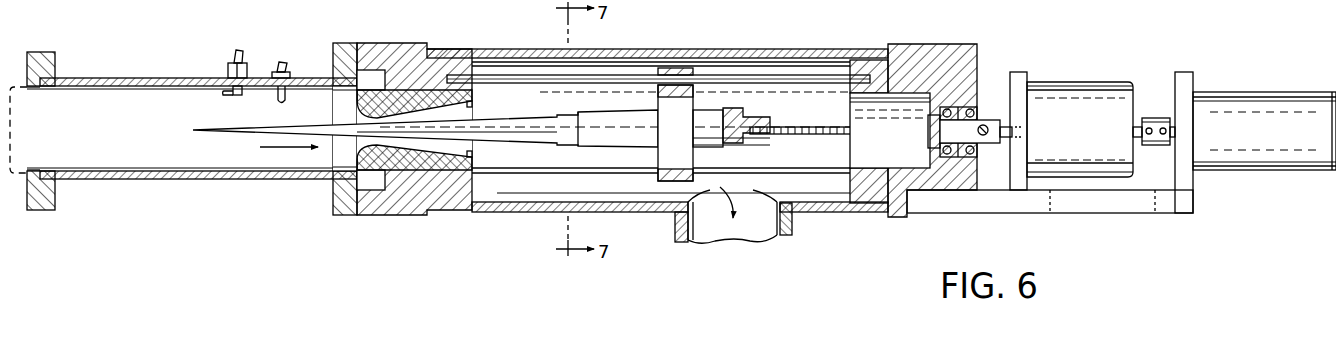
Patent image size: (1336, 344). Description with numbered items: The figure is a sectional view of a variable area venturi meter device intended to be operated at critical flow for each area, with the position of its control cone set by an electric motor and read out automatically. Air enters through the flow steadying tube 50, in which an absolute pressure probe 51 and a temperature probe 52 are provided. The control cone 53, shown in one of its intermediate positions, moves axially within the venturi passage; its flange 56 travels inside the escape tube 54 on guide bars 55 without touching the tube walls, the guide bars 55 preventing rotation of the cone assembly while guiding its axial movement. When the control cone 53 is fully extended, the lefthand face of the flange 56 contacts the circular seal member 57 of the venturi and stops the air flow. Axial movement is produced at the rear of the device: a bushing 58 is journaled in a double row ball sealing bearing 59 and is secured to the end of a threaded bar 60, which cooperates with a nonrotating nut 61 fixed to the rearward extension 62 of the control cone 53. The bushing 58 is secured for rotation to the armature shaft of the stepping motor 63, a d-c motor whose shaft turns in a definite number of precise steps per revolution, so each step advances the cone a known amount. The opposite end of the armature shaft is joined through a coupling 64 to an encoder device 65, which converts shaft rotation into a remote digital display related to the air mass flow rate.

The flow steadying tube 50 is at (118, 78).
The absolute pressure probe 51 is at (228, 64).
The temperature probe 52 is at (277, 72).
The control cone 53 is at (522, 148).
The escape tube 54 is at (644, 49).
The guide bars 55 is at (757, 63).
The flange 56 is at (670, 181).
The circular seal member 57 is at (472, 97).
The bushing 58 is at (985, 120).
The double row ball sealing bearing 59 is at (963, 157).
The threaded bar 60 is at (872, 136).
The nonrotating nut 61 is at (750, 140).
The rearward extension 62 is at (708, 110).
The stepping motor 63 is at (1068, 90).
The coupling 64 is at (1153, 118).
The encoder device 65 is at (1260, 92).